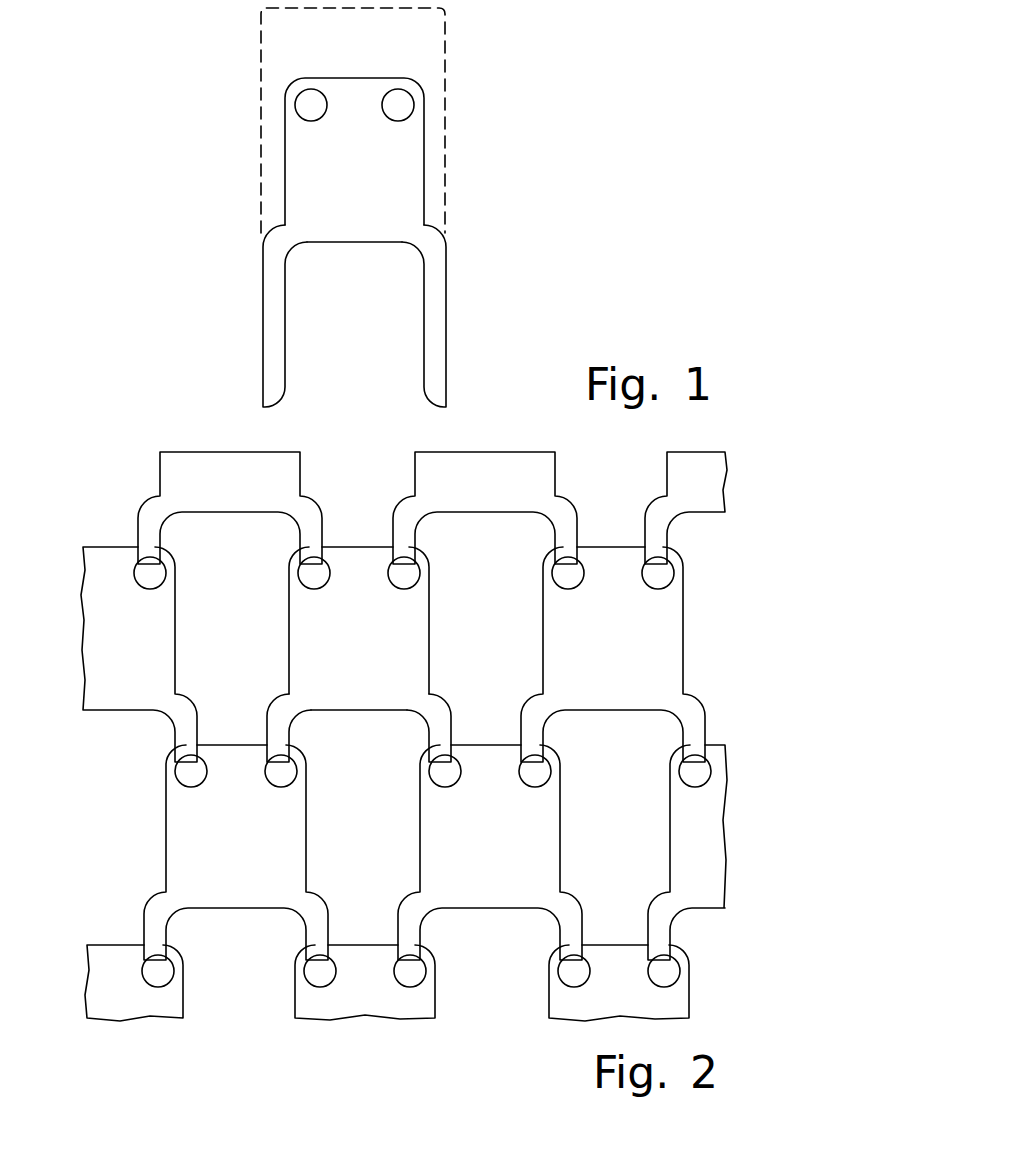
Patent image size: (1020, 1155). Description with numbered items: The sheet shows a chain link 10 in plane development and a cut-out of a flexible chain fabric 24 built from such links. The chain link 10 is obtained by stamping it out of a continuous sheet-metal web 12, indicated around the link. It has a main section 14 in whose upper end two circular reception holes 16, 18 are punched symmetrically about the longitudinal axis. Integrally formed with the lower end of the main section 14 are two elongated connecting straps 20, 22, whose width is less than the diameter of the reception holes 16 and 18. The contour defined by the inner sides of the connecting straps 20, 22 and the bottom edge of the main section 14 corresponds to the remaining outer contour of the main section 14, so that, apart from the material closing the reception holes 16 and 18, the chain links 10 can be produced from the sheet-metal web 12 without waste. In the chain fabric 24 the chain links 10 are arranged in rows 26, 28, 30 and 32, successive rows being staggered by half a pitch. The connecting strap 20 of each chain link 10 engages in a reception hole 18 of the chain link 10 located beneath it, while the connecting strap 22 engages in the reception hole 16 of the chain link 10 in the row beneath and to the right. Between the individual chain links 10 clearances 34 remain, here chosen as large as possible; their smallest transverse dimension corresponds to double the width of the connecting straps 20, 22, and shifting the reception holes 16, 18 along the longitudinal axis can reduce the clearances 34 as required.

In FIG. 1, the chain link 10 is at (364, 240).
In FIG. 2, the chain link 10 is at (355, 656).
In FIG. 1, the sheet-metal web 12 is at (436, 32).
In FIG. 1, the main section 14 is at (305, 182).
In FIG. 2, the main section 14 is at (370, 647).
In FIG. 1, the reception hole 16 is at (297, 101).
In FIG. 2, the reception hole 16 is at (442, 778).
In FIG. 1, the reception hole 18 is at (413, 107).
In FIG. 2, the reception hole 18 is at (285, 783).
In FIG. 1, the connecting strap 20 is at (268, 323).
In FIG. 2, the connecting strap 20 is at (282, 733).
In FIG. 1, the connecting strap 22 is at (438, 323).
In FIG. 2, the connecting strap 22 is at (441, 720).
In FIG. 2, the chain fabric 24 is at (118, 462).
In FIG. 2, the row 26 is at (148, 494).
In FIG. 2, the row 28 is at (137, 638).
In FIG. 2, the row 30 is at (379, 852).
In FIG. 2, the row 32 is at (160, 1000).
In FIG. 2, the clearance 34 is at (503, 647).